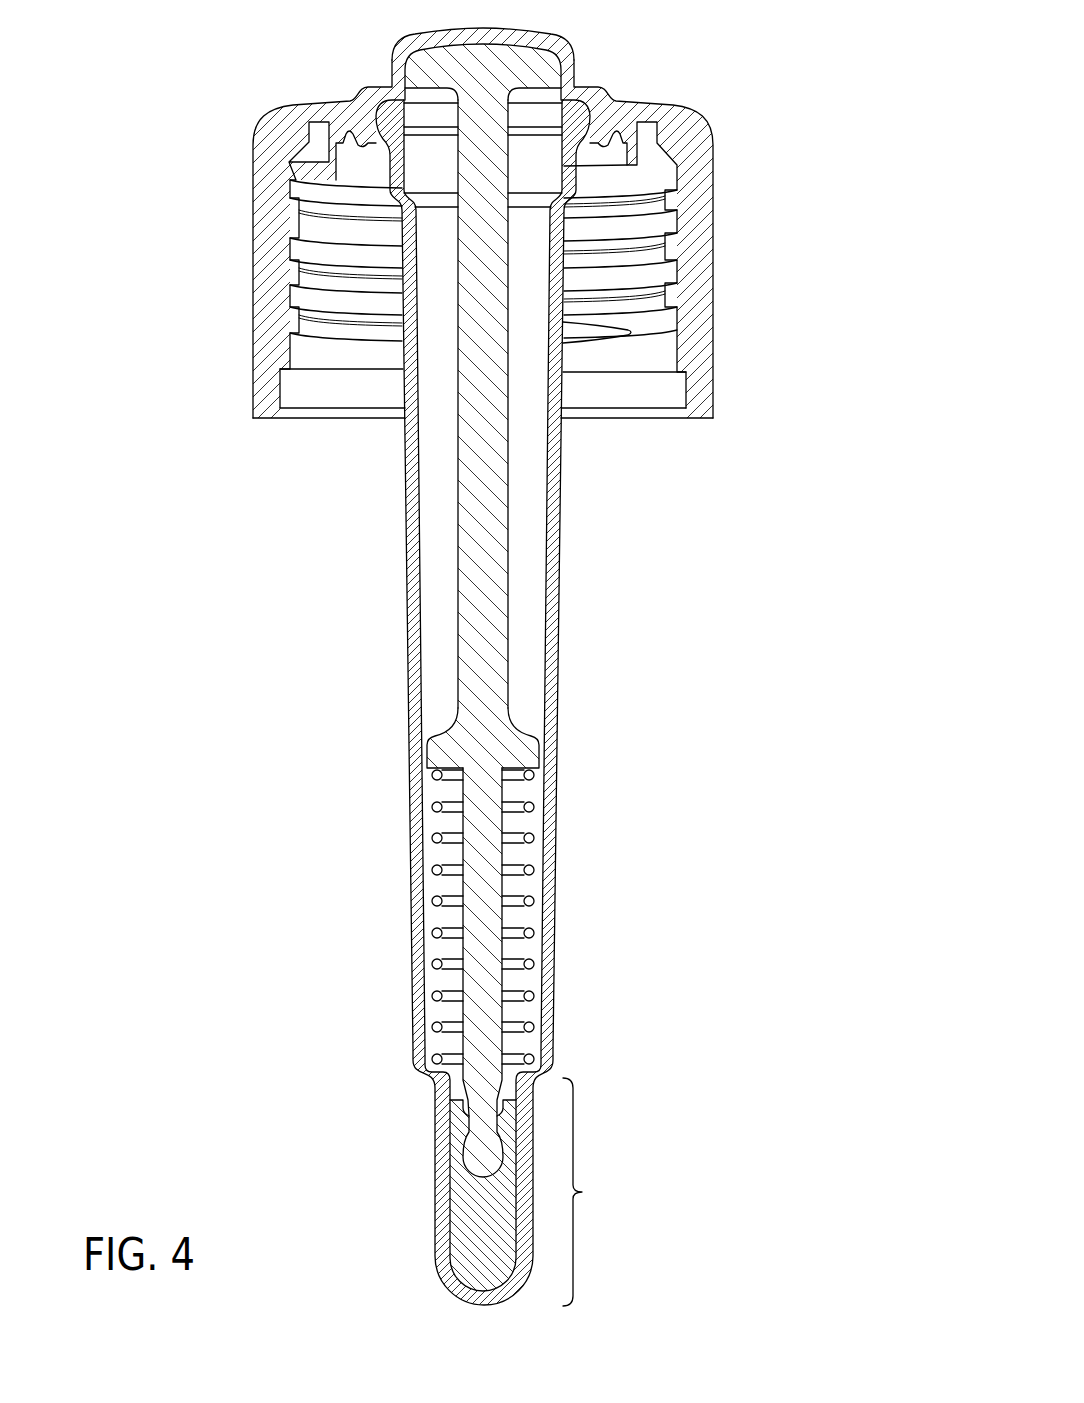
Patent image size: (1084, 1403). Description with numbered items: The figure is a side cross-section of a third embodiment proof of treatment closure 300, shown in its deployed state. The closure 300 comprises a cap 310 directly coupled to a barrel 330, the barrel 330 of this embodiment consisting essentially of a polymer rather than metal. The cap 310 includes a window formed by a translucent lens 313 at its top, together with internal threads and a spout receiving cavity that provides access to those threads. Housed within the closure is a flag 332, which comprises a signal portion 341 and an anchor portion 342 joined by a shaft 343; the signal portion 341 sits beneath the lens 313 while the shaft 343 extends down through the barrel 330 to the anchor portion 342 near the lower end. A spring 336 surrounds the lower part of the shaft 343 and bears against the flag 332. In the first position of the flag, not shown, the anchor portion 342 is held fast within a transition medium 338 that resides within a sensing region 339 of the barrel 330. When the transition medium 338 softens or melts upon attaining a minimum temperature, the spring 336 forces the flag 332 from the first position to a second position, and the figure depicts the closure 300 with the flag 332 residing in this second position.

The proof of treatment closure 300 is at (533, 653).
The cap 310 is at (252, 152).
The translucent lens 313 is at (503, 30).
The barrel 330 is at (559, 624).
The flag 332 is at (527, 698).
The spring 336 is at (531, 898).
The transition medium 338 is at (478, 1223).
The sensing region 339 is at (614, 1192).
The signal portion 341 is at (542, 75).
The anchor portion 342 is at (486, 1035).
The shaft 343 is at (508, 523).